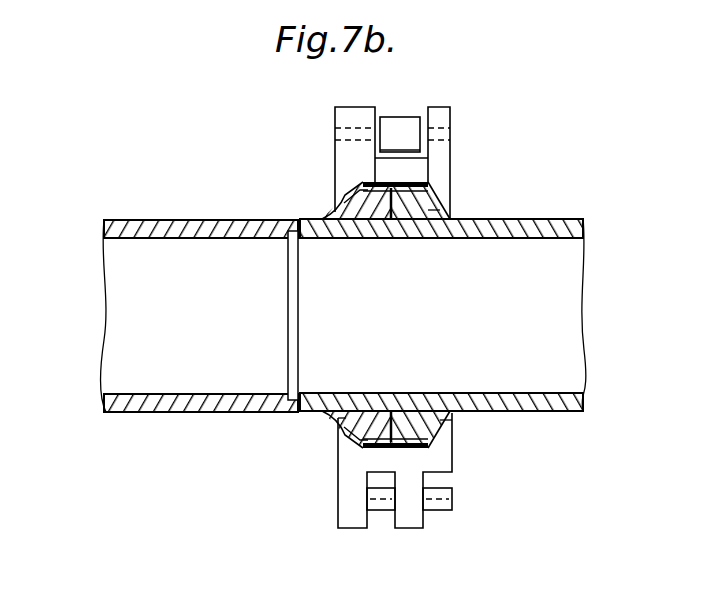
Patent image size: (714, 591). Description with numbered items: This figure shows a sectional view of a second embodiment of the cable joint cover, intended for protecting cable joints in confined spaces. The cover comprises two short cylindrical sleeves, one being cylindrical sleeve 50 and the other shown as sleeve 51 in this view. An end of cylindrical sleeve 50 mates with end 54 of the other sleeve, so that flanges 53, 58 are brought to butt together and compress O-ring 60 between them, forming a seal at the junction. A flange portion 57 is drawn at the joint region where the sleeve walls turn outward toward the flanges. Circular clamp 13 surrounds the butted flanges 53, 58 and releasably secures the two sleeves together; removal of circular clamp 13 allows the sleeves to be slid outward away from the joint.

The circular clamp 13 is at (440, 153).
The cylindrical sleeve 50 is at (571, 319).
The pipe 51 is at (116, 311).
The flange 53 is at (358, 192).
The end of cylindrical sleeve 54 is at (282, 412).
The flange 57 is at (300, 222).
The flange 58 is at (417, 206).
The O-ring 60 is at (353, 202).